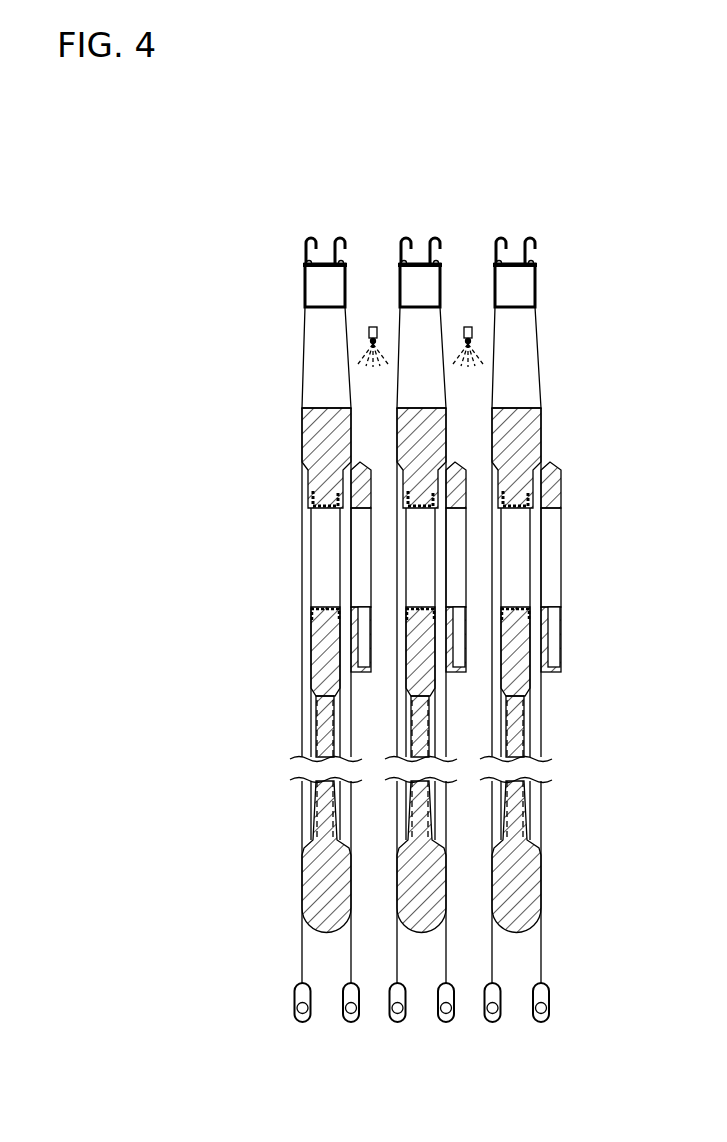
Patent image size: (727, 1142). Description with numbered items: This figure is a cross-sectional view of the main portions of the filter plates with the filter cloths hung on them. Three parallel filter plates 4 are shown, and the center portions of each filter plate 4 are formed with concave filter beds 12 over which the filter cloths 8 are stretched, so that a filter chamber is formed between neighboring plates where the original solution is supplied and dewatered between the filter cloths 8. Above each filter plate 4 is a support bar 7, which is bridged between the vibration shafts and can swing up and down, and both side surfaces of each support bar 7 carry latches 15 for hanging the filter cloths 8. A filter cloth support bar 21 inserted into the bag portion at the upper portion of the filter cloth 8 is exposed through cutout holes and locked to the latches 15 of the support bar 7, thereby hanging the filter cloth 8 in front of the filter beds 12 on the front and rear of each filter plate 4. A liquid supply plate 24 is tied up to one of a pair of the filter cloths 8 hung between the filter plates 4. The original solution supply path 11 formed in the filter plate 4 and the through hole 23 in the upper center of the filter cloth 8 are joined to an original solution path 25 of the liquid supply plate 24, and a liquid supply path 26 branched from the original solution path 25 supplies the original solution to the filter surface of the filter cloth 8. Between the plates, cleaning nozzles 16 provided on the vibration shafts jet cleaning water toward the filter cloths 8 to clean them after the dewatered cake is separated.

The filter plate 4 is at (317, 649).
The support bar 7 is at (551, 285).
The filter cloth 8 is at (302, 712).
The original solution supply path 11 is at (320, 575).
The filter bed 12 is at (303, 797).
The latch 15 is at (305, 238).
The cleaning nozzle 16 is at (468, 326).
The filter cloth support bar 21 is at (305, 263).
The through hole 23 is at (343, 535).
The liquid supply plate 24 is at (590, 485).
The original solution path 25 is at (590, 557).
The liquid supply path 26 is at (590, 639).